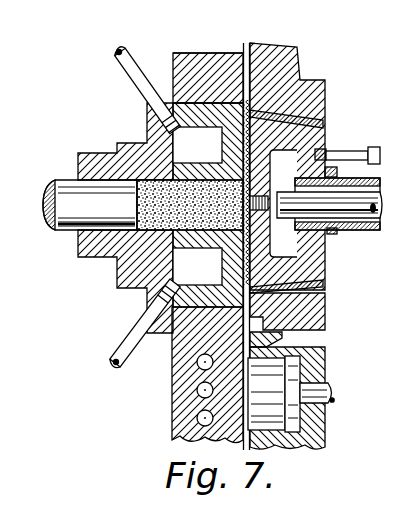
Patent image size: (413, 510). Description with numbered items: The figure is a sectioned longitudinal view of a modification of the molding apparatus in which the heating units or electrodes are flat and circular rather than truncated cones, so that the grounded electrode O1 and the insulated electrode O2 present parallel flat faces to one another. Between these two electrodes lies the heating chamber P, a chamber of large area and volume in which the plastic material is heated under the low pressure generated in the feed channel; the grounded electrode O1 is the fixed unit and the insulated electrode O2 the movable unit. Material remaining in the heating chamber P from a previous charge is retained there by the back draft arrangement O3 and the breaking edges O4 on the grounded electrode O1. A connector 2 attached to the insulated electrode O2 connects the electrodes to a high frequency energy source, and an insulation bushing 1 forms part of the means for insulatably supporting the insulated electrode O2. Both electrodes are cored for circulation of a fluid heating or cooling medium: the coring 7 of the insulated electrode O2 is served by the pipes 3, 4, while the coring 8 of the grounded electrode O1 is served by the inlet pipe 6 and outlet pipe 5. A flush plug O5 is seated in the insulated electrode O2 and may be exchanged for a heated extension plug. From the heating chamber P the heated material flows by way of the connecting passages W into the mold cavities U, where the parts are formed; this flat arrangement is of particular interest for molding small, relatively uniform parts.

The insulation bushing 1 is at (320, 88).
The connector 2 is at (338, 150).
The pipe 3 is at (381, 178).
The pipe 4 is at (370, 195).
The outlet pipe 5 is at (126, 66).
The inlet pipe 6 is at (127, 335).
The coring 7 is at (297, 268).
The coring 8 is at (187, 267).
The grounded electrode O1 is at (150, 133).
The insulated electrode O2 is at (283, 177).
The back draft arrangement O3 is at (197, 266).
The breaking edges O4 is at (175, 342).
The flush plug O5 is at (283, 231).
The heating chamber P is at (265, 270).
The connecting passages W is at (277, 337).
The mold cavities U is at (328, 420).